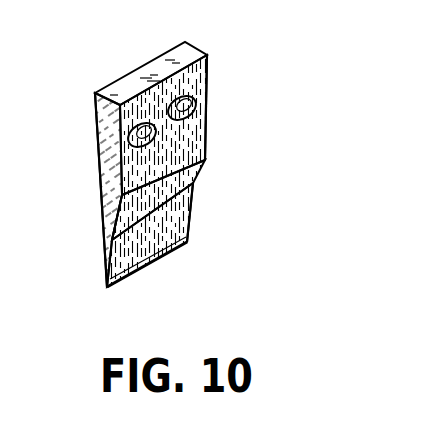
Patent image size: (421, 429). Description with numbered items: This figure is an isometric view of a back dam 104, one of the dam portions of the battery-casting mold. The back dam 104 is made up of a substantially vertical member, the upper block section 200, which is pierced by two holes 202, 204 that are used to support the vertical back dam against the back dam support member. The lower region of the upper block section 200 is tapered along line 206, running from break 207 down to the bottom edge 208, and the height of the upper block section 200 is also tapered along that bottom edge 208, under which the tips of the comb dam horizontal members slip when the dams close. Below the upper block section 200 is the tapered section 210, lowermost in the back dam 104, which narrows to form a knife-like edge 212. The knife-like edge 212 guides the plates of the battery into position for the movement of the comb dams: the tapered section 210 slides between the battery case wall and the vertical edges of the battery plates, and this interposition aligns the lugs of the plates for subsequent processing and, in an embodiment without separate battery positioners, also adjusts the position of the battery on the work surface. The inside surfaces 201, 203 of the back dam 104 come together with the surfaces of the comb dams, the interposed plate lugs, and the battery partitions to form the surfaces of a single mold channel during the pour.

The upper block section 200 is at (178, 143).
The hole 204 is at (210, 77).
The back dam 104 is at (216, 95).
The inside surface 201 is at (102, 178).
The hole 202 is at (128, 140).
The break 207 is at (202, 175).
The bottom edge 208 is at (194, 207).
The tapered section 210 is at (190, 233).
The knife-like edge 212 is at (179, 249).
The taper line 206 is at (98, 201).
The inside surface 203 is at (128, 223).